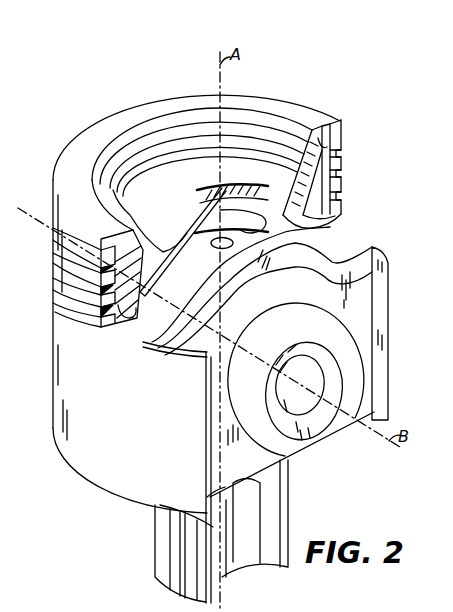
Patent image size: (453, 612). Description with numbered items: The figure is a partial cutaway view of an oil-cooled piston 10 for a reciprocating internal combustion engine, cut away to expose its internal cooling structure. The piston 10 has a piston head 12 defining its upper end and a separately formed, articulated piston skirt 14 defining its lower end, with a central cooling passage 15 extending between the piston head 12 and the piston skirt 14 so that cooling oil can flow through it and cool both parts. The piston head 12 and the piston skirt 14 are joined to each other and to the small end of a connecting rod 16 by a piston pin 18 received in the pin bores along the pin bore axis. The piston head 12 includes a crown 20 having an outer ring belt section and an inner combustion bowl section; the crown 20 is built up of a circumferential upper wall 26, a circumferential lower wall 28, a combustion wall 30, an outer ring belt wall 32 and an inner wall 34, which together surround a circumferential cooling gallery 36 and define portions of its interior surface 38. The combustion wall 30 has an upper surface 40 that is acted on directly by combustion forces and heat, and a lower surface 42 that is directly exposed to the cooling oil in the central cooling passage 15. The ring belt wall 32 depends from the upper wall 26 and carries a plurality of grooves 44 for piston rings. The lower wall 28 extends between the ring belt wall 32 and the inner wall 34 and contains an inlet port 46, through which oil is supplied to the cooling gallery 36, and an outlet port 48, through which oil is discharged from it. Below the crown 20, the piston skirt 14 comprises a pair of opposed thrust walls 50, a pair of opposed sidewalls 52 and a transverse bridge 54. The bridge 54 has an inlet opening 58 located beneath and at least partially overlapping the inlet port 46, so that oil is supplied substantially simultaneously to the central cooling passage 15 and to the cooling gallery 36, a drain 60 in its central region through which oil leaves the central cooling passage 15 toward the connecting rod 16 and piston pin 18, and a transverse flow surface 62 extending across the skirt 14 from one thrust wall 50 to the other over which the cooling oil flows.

The oil-cooled piston 10 is at (91, 73).
The piston head 12 is at (78, 134).
The articulated piston skirt 14 is at (53, 398).
The central cooling passage 15 is at (208, 216).
The connecting rod 16 is at (155, 550).
The piston pin 18 is at (323, 446).
The crown 20 is at (53, 262).
The circumferential upper wall 26 is at (300, 110).
The circumferential lower wall 28 is at (118, 330).
The combustion wall 30 is at (188, 230).
The outer ring belt wall 32 is at (343, 141).
The inner wall 34 is at (163, 285).
The circumferential cooling gallery 36 is at (330, 208).
The interior surface 38 is at (343, 130).
The upper surface 40 is at (250, 166).
The lower surface 42 is at (268, 205).
The grooves 44 is at (340, 176).
The inlet port 46 is at (256, 231).
The outlet port 48 is at (133, 313).
The thrust walls 50 is at (103, 470).
The sidewalls 52 is at (353, 305).
The transverse bridge 54 is at (151, 338).
The inlet opening 58 is at (313, 246).
The drain 60 is at (213, 242).
The transverse flow surface 62 is at (196, 283).